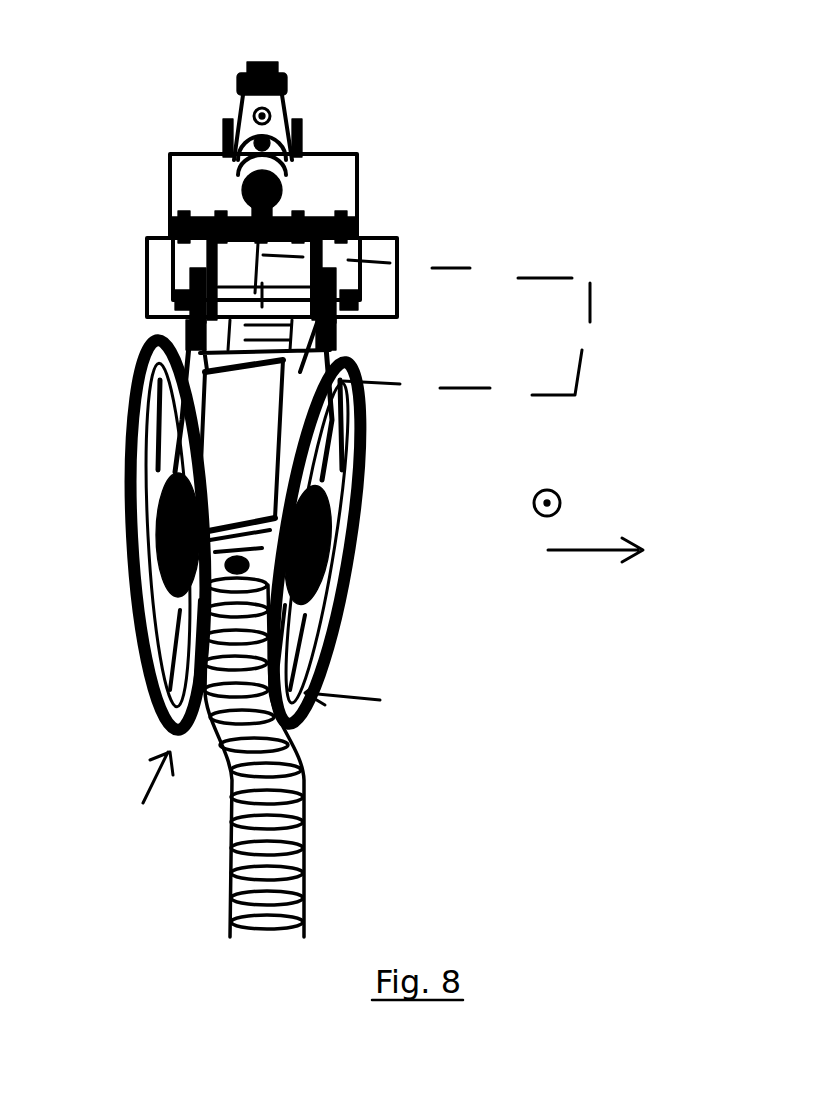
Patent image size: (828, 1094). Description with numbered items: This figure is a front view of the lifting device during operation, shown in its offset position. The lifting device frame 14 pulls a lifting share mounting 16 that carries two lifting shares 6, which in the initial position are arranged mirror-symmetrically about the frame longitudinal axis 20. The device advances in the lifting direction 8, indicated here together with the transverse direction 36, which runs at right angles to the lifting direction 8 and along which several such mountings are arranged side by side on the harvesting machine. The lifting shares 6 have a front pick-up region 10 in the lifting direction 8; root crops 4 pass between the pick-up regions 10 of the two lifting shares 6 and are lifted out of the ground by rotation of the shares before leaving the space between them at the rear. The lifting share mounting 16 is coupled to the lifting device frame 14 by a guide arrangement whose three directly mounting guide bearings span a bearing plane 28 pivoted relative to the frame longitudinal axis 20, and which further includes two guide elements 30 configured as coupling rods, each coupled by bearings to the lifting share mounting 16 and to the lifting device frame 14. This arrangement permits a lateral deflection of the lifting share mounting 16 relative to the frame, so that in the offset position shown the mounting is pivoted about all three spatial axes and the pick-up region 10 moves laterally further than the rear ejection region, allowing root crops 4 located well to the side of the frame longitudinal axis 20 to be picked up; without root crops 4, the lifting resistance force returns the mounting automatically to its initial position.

The root crops 4 is at (267, 817).
The lifting shares 6 is at (145, 635).
The lifting direction 8 is at (566, 505).
The pick-up region 10 is at (294, 762).
The lifting device frame 14 is at (340, 182).
The lifting share mounting 16 is at (263, 449).
The frame longitudinal axis 20 is at (258, 20).
The bearing plane 28 is at (590, 300).
The guide elements 30 is at (180, 328).
The transverse direction 36 is at (585, 552).